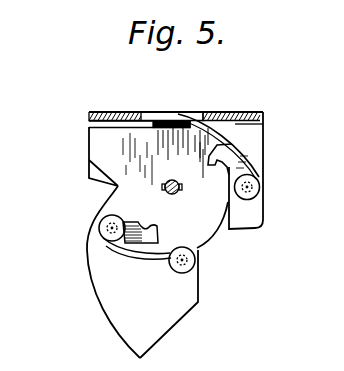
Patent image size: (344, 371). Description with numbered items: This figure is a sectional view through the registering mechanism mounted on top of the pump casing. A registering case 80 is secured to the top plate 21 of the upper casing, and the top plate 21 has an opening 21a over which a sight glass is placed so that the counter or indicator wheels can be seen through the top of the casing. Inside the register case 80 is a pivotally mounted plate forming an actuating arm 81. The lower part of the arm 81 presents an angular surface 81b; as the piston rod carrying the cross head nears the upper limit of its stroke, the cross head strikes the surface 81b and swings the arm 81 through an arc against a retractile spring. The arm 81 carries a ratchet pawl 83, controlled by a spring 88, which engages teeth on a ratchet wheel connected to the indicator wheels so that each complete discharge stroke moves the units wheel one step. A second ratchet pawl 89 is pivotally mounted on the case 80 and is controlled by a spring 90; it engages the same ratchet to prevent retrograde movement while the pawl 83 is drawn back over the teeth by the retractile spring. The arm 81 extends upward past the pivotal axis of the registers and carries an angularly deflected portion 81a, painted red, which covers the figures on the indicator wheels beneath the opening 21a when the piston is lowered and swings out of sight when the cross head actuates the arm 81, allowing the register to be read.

The top plate 21 is at (107, 113).
The opening 21a is at (155, 112).
The angularly deflected portion 81a is at (147, 113).
The registering case 80 is at (250, 127).
The spring 90 is at (240, 148).
The ratchet pawl 89 is at (257, 171).
The ratchet pawl 83 is at (147, 226).
The spring 88 is at (123, 253).
The actuating arm 81 is at (178, 280).
The angular surface 81b is at (100, 302).